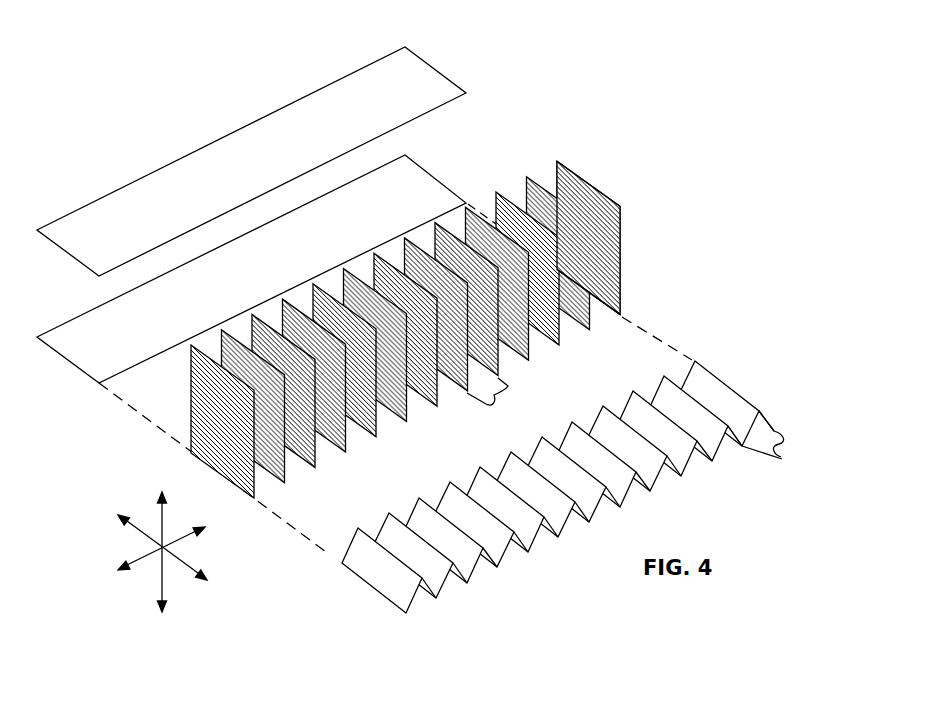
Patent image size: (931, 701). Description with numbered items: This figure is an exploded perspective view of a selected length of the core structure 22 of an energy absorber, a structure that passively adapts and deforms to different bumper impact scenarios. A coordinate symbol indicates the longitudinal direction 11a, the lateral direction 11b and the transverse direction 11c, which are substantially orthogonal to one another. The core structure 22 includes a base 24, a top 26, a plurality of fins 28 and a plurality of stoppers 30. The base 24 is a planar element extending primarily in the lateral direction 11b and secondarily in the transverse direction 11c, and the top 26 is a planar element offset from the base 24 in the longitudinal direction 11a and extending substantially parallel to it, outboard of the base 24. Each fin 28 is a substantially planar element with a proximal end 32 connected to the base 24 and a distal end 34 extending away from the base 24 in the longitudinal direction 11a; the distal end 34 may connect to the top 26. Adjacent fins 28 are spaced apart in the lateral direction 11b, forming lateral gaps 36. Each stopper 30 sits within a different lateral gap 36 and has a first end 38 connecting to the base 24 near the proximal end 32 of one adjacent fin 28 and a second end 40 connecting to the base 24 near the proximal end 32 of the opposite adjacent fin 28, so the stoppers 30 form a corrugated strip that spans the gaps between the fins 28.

The core structure 22 is at (606, 58).
The base 24 is at (248, 272).
The top 26 is at (257, 160).
The fin 28 is at (624, 234).
The stopper 30 is at (778, 452).
The proximal end 32 is at (608, 307).
The distal end 34 is at (598, 196).
The lateral gap 36 is at (494, 395).
The first end 38 is at (738, 440).
The second end 40 is at (772, 422).
The longitudinal direction 11a is at (160, 522).
The lateral direction 11b is at (127, 560).
The transverse direction 11c is at (197, 562).